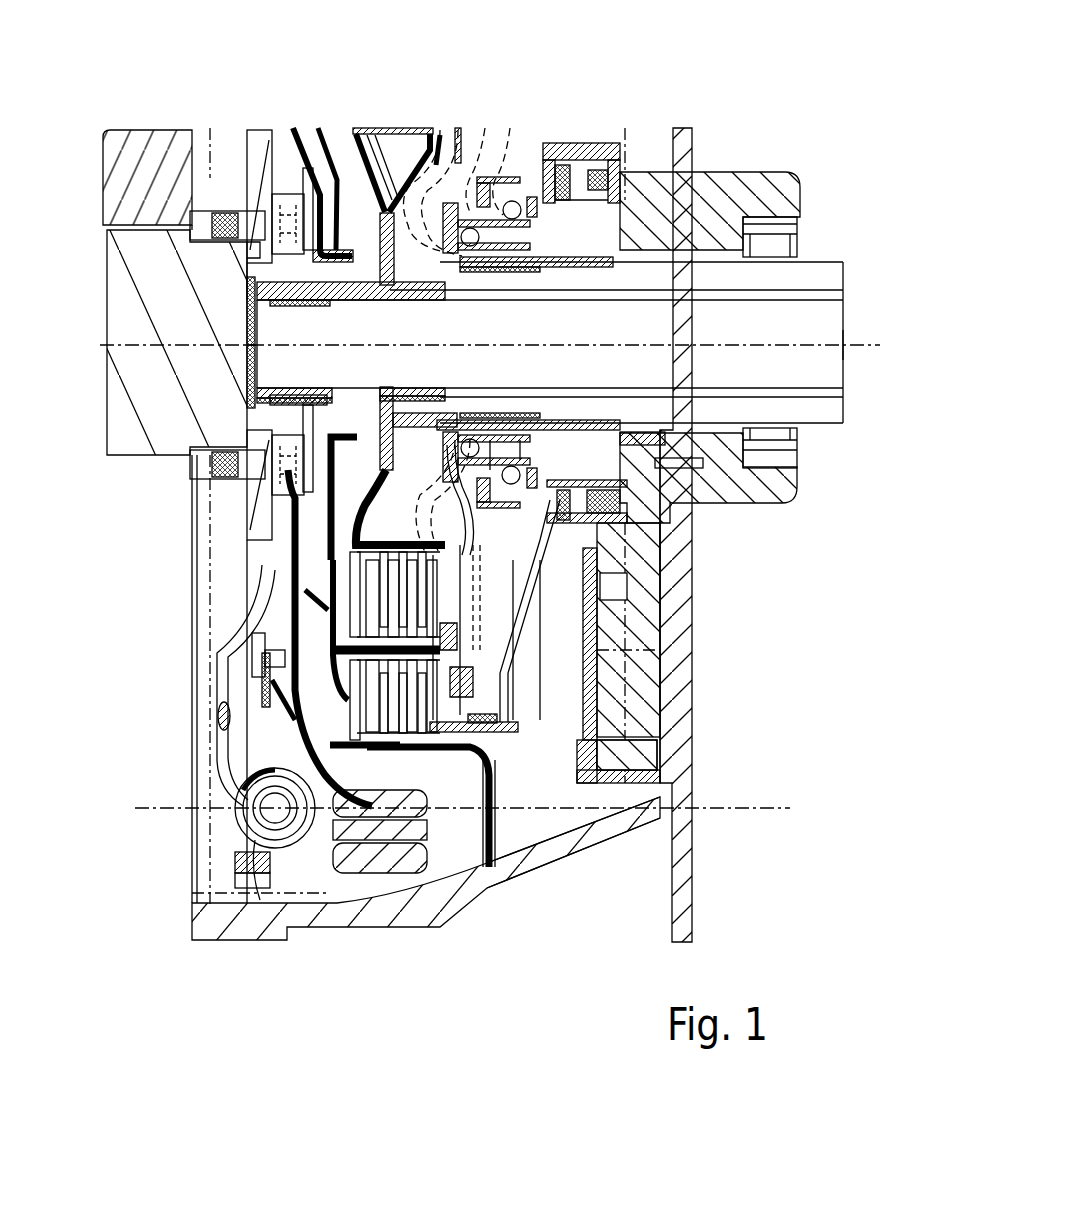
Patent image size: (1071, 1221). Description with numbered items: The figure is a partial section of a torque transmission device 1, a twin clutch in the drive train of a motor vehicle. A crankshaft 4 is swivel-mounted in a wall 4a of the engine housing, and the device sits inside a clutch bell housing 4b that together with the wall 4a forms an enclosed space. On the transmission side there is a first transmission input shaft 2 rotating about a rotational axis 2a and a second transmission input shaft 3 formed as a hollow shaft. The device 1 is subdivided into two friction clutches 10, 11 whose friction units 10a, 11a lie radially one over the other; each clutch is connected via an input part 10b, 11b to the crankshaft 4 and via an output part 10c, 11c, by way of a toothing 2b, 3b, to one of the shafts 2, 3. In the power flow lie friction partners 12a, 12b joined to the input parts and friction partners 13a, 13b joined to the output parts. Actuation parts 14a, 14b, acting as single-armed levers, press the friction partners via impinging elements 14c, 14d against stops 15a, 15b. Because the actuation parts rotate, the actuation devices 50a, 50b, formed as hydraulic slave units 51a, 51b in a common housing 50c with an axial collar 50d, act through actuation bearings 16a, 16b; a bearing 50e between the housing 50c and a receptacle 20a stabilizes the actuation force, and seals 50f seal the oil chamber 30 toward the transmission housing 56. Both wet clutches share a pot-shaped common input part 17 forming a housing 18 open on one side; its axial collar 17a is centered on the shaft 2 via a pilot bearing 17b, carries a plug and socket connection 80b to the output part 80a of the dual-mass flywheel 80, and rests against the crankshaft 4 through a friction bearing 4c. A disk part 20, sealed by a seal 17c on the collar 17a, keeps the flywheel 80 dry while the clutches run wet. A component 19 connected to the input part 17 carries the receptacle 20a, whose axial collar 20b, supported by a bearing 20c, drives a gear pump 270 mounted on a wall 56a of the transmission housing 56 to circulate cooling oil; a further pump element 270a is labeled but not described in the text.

The torque transmission device 1 is at (650, 60).
The first transmission input shaft 2 is at (655, 339).
The rotational axis 2a is at (860, 340).
The toothing 2b is at (367, 383).
The second transmission input shaft 3 is at (679, 296).
The toothing 3b is at (417, 307).
The crankshaft 4 is at (167, 300).
The wall of the engine housing 4a is at (188, 128).
The clutch bell housing 4b is at (410, 940).
The friction bearing 4c is at (245, 292).
The friction clutch 10 is at (450, 760).
The friction unit 10a is at (350, 683).
The input part 10b is at (368, 752).
The output part 10c is at (432, 405).
The friction clutch 11 is at (392, 528).
The friction unit 11a is at (350, 612).
The input part 11b is at (407, 640).
The output part 11c is at (508, 430).
The friction partner 12a is at (360, 693).
The friction partner 12b is at (360, 593).
The friction partner 13a is at (372, 730).
The friction partner 13b is at (362, 565).
The actuation part 14a is at (500, 623).
The actuation part 14b is at (460, 552).
The impinging element 14c is at (480, 695).
The impinging element 14d is at (442, 607).
The stop 15a is at (370, 712).
The stop 15b is at (343, 640).
The actuation bearing 16a is at (535, 445).
The actuation bearing 16b is at (522, 468).
The common input part 17 is at (330, 545).
The axial collar 17a is at (247, 382).
The pilot bearing 17b is at (245, 321).
The seal 17c is at (257, 417).
The housing 18 is at (534, 712).
The component 19 is at (520, 653).
The disk part 20 is at (492, 832).
The receptacle 20a is at (587, 518).
The axial collar 20b is at (633, 533).
The bearing 20c is at (603, 525).
The chamber 30 is at (530, 803).
The actuation device 50a is at (640, 500).
The actuation device 50b is at (635, 197).
The housing 50c is at (615, 432).
The axial collar 50d is at (632, 436).
The bearing 50e is at (613, 505).
The seals 50f is at (660, 467).
The hydraulic slave unit 51a is at (655, 452).
The hydraulic slave unit 51b is at (580, 208).
The transmission housing 56 is at (685, 917).
The wall of transmission housing 56a is at (690, 752).
The dual-mass flywheel 80 is at (214, 866).
The output part 80a is at (322, 132).
The plug and socket connection 80b is at (253, 415).
The pump 270 is at (668, 692).
The bearing support cavity 270a is at (640, 545).